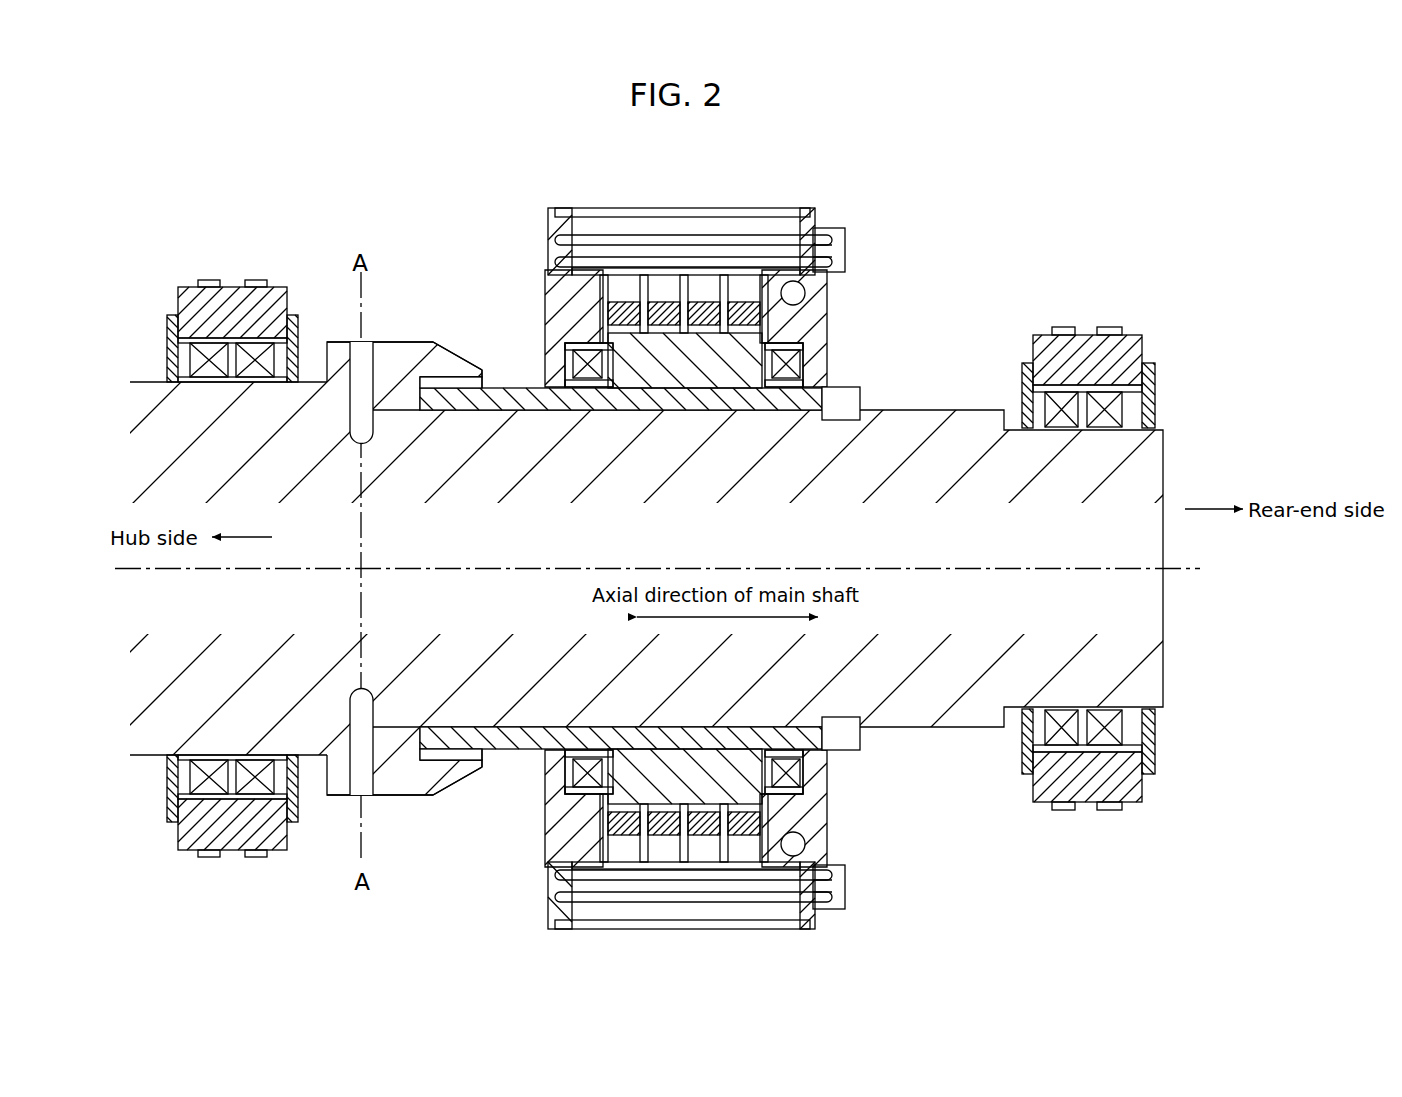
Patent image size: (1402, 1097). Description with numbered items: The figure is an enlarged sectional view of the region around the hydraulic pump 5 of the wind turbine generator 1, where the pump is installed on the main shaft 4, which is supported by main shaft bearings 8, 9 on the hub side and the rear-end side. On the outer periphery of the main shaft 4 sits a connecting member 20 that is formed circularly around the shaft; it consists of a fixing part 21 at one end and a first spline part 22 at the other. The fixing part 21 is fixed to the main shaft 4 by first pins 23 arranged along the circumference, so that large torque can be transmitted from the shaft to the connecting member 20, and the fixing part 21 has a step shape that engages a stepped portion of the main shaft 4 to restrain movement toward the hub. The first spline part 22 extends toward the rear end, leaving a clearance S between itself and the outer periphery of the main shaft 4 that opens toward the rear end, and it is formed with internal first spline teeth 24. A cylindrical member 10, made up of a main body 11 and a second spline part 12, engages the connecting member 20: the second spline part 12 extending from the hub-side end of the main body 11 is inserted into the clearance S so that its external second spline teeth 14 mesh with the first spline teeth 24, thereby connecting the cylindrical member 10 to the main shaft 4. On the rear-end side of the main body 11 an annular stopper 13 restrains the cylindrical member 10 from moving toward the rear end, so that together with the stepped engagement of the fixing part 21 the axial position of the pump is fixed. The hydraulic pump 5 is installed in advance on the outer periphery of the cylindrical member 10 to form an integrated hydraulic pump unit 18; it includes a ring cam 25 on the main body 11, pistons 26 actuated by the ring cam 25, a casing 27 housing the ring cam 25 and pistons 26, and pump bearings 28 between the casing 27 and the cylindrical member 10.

The wind turbine generator 1 is at (866, 184).
The main shaft 4 is at (716, 551).
The hydraulic pump 5 is at (720, 230).
The main shaft bearing 8 is at (227, 290).
The main shaft bearing 9 is at (1045, 350).
The cylindrical member 10 is at (527, 354).
The main body 11 is at (678, 378).
The second spline part 12 is at (480, 405).
The annular stopper 13 is at (860, 400).
The second spline teeth 14 is at (440, 392).
The hydraulic pump unit 18 is at (517, 224).
The connecting member 20 is at (322, 300).
The fixing part 21 is at (395, 358).
The first spline part 22 is at (440, 362).
The first pin 23 is at (352, 368).
The first spline teeth 24 is at (452, 374).
The ring cam 25 is at (768, 330).
The piston 26 is at (770, 306).
The casing 27 is at (806, 291).
The pump bearing 28 is at (582, 344).
The clearance S is at (491, 377).